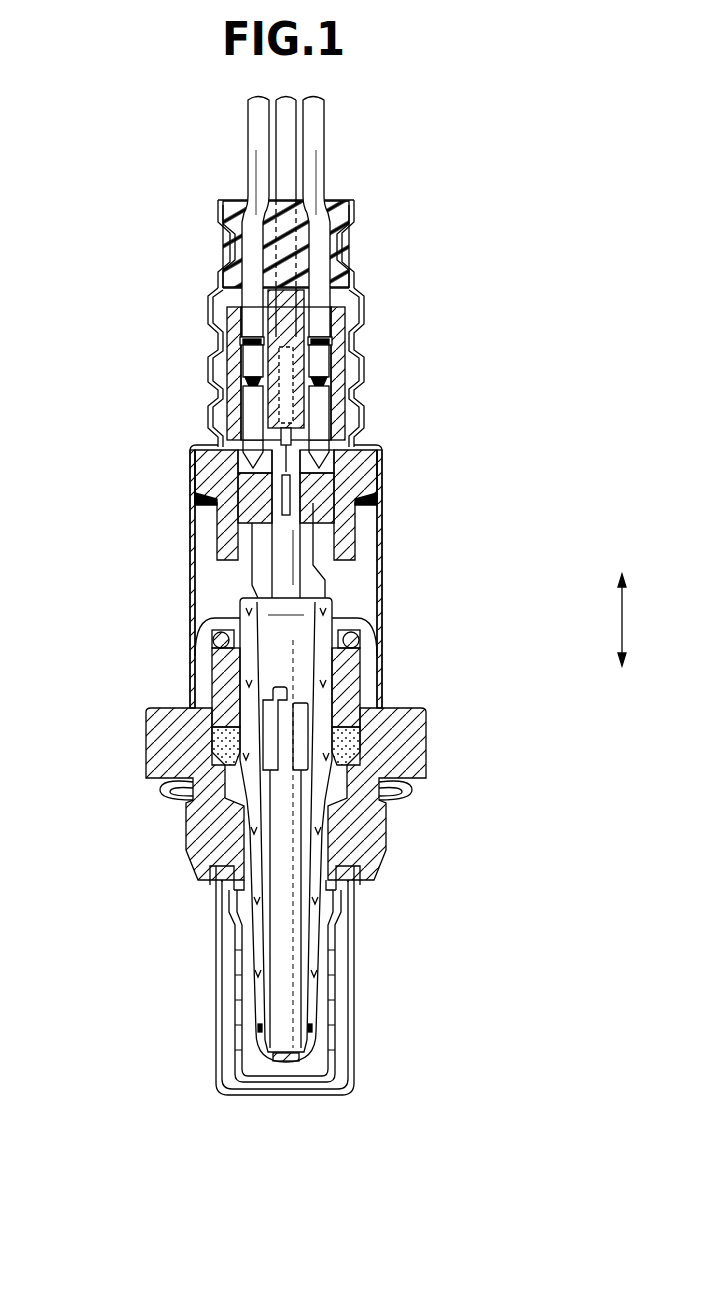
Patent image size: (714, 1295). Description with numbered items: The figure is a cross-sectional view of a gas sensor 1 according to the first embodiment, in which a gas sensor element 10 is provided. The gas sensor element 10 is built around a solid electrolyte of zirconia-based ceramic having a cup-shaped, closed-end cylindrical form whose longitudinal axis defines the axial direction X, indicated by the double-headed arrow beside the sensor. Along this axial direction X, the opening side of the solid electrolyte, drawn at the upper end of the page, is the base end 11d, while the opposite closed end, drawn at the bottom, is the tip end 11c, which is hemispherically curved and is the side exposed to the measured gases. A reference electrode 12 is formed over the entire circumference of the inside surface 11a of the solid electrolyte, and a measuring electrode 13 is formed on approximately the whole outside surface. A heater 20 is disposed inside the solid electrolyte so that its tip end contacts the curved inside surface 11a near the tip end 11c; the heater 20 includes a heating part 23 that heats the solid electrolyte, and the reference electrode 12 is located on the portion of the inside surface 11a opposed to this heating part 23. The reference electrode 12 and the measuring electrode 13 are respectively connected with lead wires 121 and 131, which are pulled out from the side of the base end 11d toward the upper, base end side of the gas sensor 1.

The gas sensor 1 is at (451, 334).
The gas sensor element 10 is at (332, 890).
The inside surface 11a is at (296, 1052).
The tip end 11c is at (287, 1063).
The base end 11d is at (327, 583).
The reference electrode 12 is at (268, 1013).
The measuring electrode 13 is at (256, 1028).
The heater 20 is at (283, 945).
The heating part 23 is at (290, 997).
The lead wire 121 is at (248, 580).
The lead wire 131 is at (313, 540).
The axial direction X is at (632, 620).